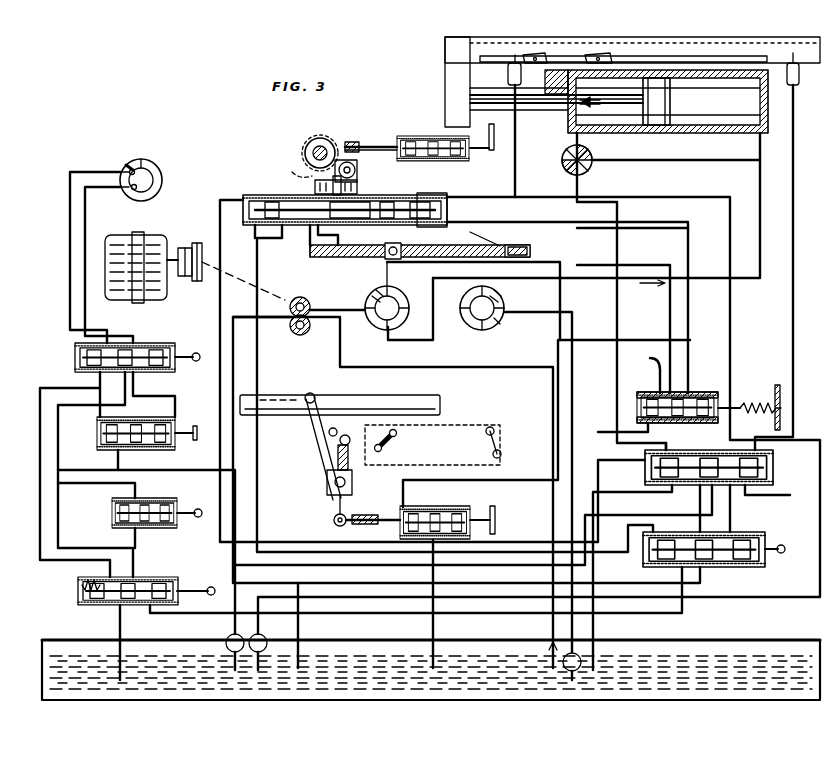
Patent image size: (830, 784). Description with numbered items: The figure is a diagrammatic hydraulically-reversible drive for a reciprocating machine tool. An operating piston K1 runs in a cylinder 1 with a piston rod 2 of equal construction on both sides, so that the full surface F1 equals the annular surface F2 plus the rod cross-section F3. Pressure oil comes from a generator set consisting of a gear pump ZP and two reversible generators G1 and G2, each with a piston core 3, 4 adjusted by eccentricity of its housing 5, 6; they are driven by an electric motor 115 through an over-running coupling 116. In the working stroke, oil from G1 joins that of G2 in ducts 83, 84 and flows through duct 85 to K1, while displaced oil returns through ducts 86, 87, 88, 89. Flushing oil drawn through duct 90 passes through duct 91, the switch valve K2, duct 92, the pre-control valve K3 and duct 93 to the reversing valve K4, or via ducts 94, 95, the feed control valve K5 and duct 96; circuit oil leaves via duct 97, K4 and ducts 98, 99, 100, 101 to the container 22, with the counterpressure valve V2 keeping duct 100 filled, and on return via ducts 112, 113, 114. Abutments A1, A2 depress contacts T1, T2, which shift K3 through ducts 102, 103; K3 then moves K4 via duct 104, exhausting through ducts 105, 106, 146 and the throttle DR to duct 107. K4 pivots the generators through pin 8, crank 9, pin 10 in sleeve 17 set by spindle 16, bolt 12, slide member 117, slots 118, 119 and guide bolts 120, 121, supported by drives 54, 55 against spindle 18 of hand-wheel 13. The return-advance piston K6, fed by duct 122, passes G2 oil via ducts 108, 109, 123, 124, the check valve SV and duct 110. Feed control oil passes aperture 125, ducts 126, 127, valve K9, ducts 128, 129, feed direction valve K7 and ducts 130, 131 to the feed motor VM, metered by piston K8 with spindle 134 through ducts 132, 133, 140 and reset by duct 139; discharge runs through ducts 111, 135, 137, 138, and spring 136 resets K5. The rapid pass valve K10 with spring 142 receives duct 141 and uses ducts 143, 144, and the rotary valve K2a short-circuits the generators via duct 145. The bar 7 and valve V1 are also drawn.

The cylinder 1 is at (764, 112).
The piston rod 2 is at (522, 112).
The piston core 3 is at (399, 317).
The piston core 4 is at (460, 313).
The generator housing 5 is at (368, 318).
The generator housing 6 is at (495, 322).
The bar 7 is at (243, 208).
The pin 8 is at (312, 393).
The crank 9 is at (313, 188).
The pin 10 is at (347, 476).
The bolt 12 is at (328, 433).
The hand-wheel 13 is at (508, 325).
The spindle 16 is at (358, 168).
The sleeve 17 is at (366, 146).
The spindle 18 is at (479, 334).
The container 22 is at (482, 690).
The drive 54 is at (360, 526).
The drive 55 is at (347, 142).
The duct 83 is at (415, 340).
The duct 84 is at (440, 278).
The duct 85 is at (762, 146).
The duct 86 is at (572, 143).
The duct 87 is at (580, 214).
The duct 88 is at (579, 241).
The duct 89 is at (545, 262).
The duct 90 is at (330, 320).
The duct 91 is at (240, 320).
The duct 92 is at (545, 200).
The duct 93 is at (445, 195).
The duct 94 is at (697, 302).
The duct 95 is at (690, 351).
The duct 96 is at (670, 377).
The duct 97 is at (390, 205).
The duct 98 is at (362, 212).
The duct 99 is at (256, 257).
The duct 100 is at (258, 450).
The duct 101 is at (262, 672).
The duct 102 is at (516, 160).
The duct 103 is at (798, 160).
The duct 104 is at (228, 195).
The duct 105 is at (767, 493).
The duct 106 is at (626, 540).
The duct 107 is at (306, 672).
The duct 108 is at (545, 313).
The duct 109 is at (548, 462).
The duct 110 is at (432, 672).
The duct 111 is at (668, 449).
The duct 112 is at (253, 230).
The duct 113 is at (357, 262).
The duct 114 is at (318, 238).
The electric motor 115 is at (125, 236).
The over-running coupling 116 is at (192, 243).
The slide member 117 is at (315, 258).
The slot 118 is at (352, 258).
The slot 119 is at (488, 428).
The guide bolt 120 is at (382, 442).
The guide bolt 121 is at (528, 240).
The duct 122 is at (630, 340).
The duct 123 is at (575, 682).
The duct 124 is at (552, 510).
The small aperture 125 is at (649, 370).
The duct 126 is at (616, 426).
The duct 127 is at (748, 450).
The duct 128 is at (137, 485).
The duct 129 is at (98, 396).
The duct 130 is at (120, 188).
The duct 131 is at (106, 172).
The duct 132 is at (97, 378).
The duct 133 is at (98, 412).
The spindle 134 is at (192, 426).
The duct 135 is at (638, 492).
The spring 136 is at (760, 400).
The duct 137 is at (42, 388).
The duct 138 is at (660, 512).
The duct 139 is at (186, 390).
The duct 140 is at (154, 394).
The duct 141 is at (680, 566).
The spring 142 is at (78, 592).
The duct 143 is at (133, 572).
The duct 144 is at (55, 572).
The duct 145 is at (685, 162).
The duct 146 is at (693, 508).
The abutment A1 is at (533, 53).
The abutment A2 is at (598, 53).
The contact T1 is at (507, 75).
The contact T2 is at (800, 73).
The piston surface F1 is at (712, 128).
The annular surface F2 is at (628, 128).
The piston rod cross-section F3 is at (554, 81).
The operating piston K1 is at (655, 128).
The switch valve K2 is at (748, 530).
The rotary valve K2a is at (594, 165).
The pre-control valve K3 is at (773, 467).
The reversing valve K4 is at (280, 195).
The feed control valve K5 is at (700, 392).
The return-advance piston K6 is at (423, 133).
The feed direction valve K7 is at (72, 347).
The feed metering piston K8 is at (130, 450).
The feed switch on and off valve K9 is at (110, 512).
The rapid pass valve K10 is at (108, 605).
The feed motor VM is at (150, 160).
The throttle DR is at (324, 138).
The gear pump ZP is at (326, 307).
The generator G1 is at (366, 296).
The generator G2 is at (508, 297).
The check valve V1 is at (228, 637).
The counterpressure valve V2 is at (267, 638).
The check valve SV is at (580, 652).